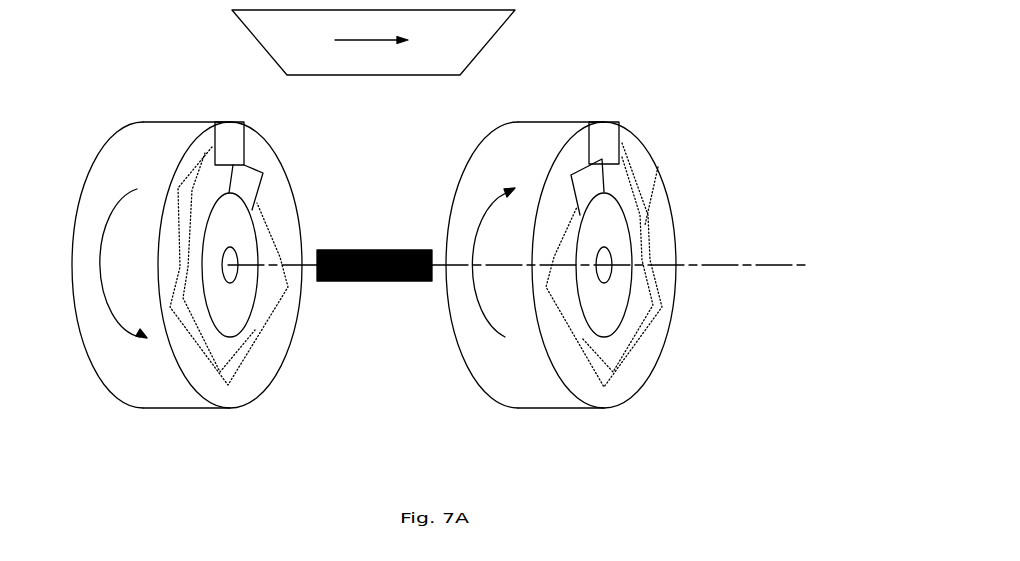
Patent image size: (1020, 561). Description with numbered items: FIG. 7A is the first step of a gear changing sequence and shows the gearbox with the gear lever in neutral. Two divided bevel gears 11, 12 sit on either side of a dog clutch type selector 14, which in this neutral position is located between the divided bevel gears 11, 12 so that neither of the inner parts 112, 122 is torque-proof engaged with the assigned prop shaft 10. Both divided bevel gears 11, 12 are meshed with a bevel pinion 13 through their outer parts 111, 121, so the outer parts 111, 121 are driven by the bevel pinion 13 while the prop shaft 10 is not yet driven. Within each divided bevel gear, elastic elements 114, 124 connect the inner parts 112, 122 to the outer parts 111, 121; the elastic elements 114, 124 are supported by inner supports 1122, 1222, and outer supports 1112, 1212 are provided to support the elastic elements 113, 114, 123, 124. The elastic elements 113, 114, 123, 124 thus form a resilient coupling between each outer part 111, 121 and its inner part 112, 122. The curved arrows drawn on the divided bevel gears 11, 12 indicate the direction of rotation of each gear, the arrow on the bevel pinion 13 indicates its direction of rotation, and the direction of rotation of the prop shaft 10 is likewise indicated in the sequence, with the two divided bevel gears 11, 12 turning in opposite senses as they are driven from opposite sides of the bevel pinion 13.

The prop shaft 10 is at (747, 255).
The divided bevel gear 11 is at (175, 114).
The divided bevel gear 12 is at (568, 112).
The bevel pinion 13 is at (464, 36).
The dog clutch type selector 14 is at (367, 241).
The outer part 111 is at (256, 390).
The inner part 112 is at (233, 317).
The elastic element 113 is at (195, 169).
The elastic element 114 is at (198, 356).
The outer support 1112 is at (239, 140).
The inner support 1122 is at (257, 180).
The outer part 121 is at (636, 384).
The inner part 122 is at (607, 317).
The elastic element 123 is at (635, 186).
The elastic element 124 is at (666, 292).
The outer support 1212 is at (668, 104).
The inner support 1222 is at (577, 180).